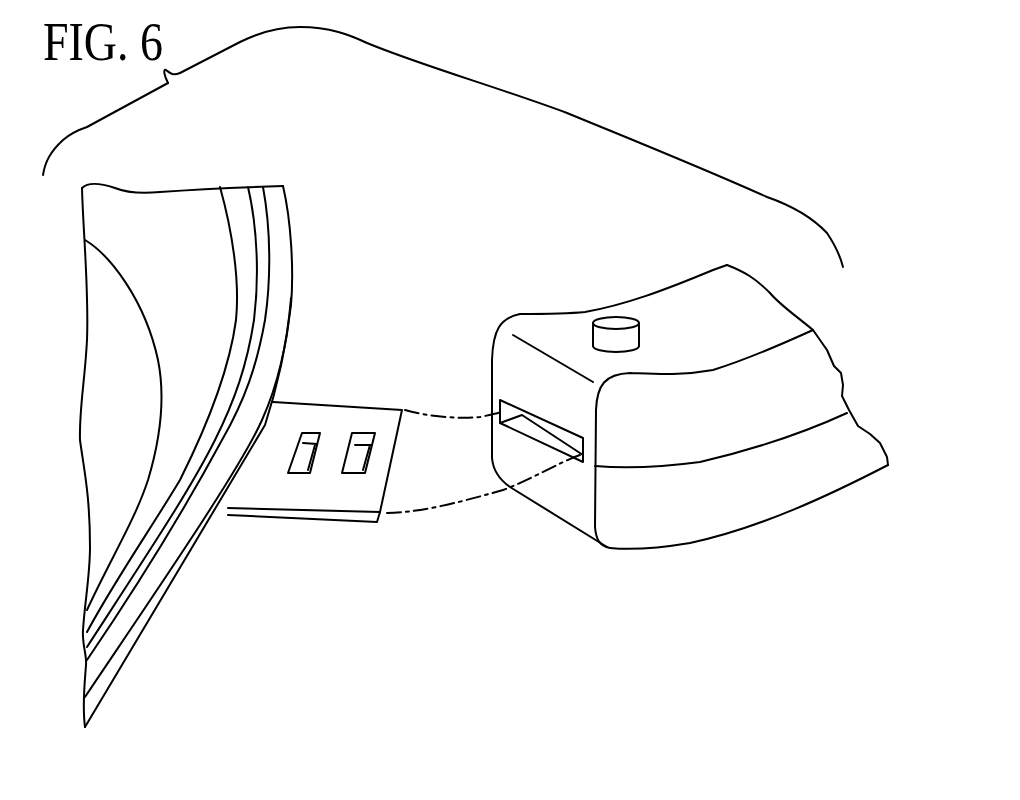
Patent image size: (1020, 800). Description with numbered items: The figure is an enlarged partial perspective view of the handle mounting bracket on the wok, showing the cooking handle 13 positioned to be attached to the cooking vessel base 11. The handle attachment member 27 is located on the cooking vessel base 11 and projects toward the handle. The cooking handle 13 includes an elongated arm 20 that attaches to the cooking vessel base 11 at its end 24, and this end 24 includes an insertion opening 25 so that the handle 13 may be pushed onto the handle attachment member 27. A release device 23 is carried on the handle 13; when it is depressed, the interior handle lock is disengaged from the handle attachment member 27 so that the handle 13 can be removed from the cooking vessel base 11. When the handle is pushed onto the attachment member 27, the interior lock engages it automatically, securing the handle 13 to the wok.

The cooking vessel base 11 is at (177, 580).
The cooking handle 13 is at (681, 283).
The elongated arm 20 is at (823, 393).
The release device 23 is at (617, 322).
The end 24 is at (577, 498).
The insertion opening 25 is at (547, 433).
The handle attachment member 27 is at (330, 493).